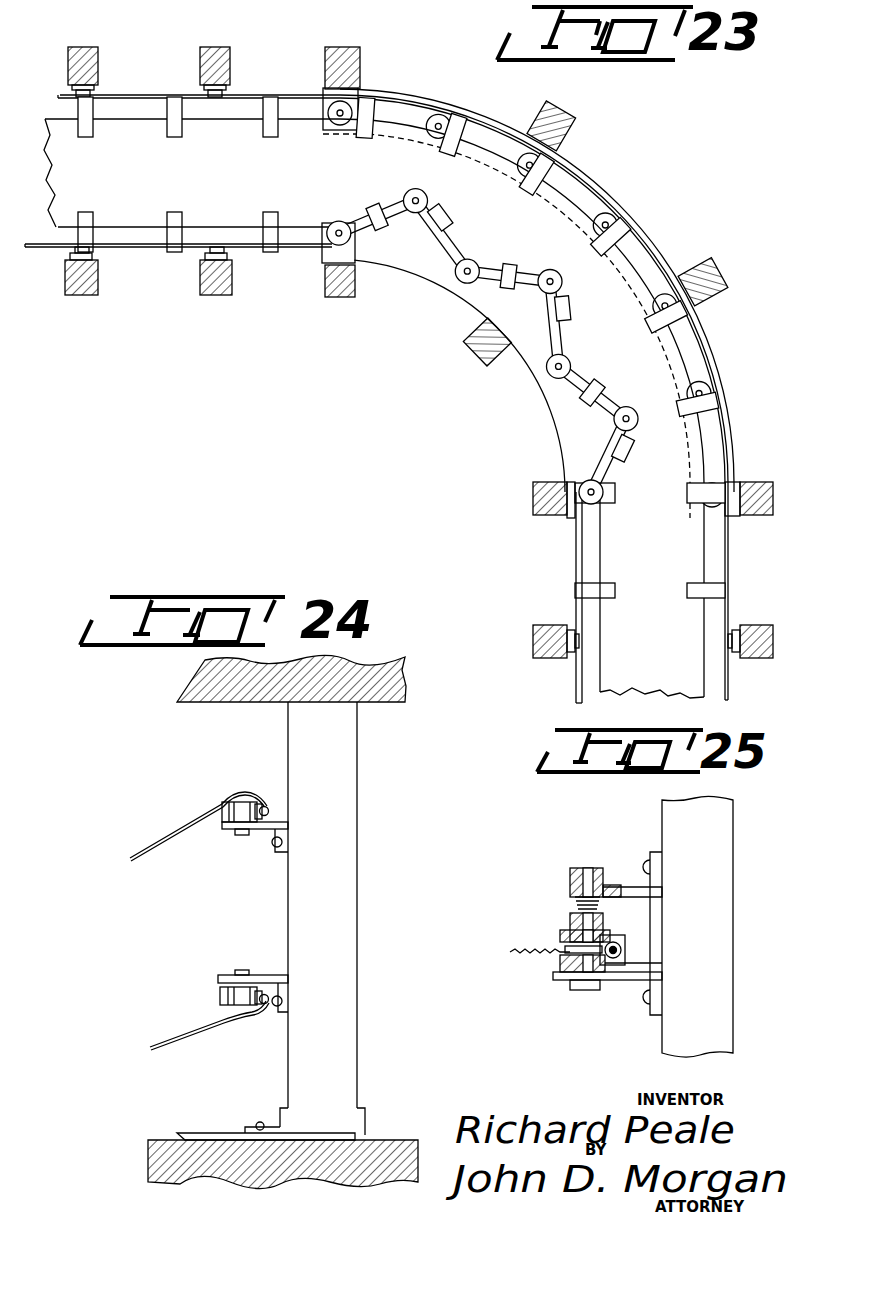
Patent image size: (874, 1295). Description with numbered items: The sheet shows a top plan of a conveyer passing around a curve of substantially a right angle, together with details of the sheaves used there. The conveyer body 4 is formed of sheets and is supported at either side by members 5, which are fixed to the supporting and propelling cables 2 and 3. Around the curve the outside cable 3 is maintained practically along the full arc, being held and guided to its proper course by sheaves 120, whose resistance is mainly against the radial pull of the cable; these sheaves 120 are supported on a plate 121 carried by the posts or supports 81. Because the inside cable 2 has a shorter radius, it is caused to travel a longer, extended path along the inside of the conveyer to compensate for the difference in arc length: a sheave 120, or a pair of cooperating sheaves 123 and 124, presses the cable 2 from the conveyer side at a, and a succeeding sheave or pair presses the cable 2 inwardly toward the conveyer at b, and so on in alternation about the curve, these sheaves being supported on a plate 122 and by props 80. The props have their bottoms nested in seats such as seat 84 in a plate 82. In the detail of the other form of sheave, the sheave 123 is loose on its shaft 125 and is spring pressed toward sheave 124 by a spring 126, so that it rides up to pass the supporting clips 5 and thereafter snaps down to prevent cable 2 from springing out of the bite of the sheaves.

In FIG. 23, the inside supporting and propelling cable 2 is at (133, 252).
In FIG. 25, the inside supporting and propelling cable 2 is at (622, 950).
In FIG. 23, the outside supporting and propelling cable 3 is at (145, 98).
In FIG. 24, the outside supporting and propelling cable 3 is at (269, 809).
In FIG. 23, the conveyer body 4 is at (50, 208).
In FIG. 24, the conveyer body 4 is at (161, 840).
In FIG. 25, the conveyer body 4 is at (512, 950).
In FIG. 23, the supporting members 5 is at (272, 97).
In FIG. 24, the supporting members 5 is at (258, 805).
In FIG. 25, the supporting members 5 is at (616, 940).
In FIG. 23, the prop 80 is at (483, 360).
In FIG. 25, the prop 80 is at (725, 882).
In FIG. 23, the prop 81 is at (566, 128).
In FIG. 24, the prop 81 is at (357, 748).
In FIG. 24, the plate 82 is at (206, 1133).
In FIG. 24, the seat 84 is at (323, 1133).
In FIG. 23, the sheave 120 is at (346, 106).
In FIG. 24, the sheave 120 is at (240, 802).
In FIG. 23, the plate 121 is at (608, 193).
In FIG. 23, the plate 122 is at (536, 372).
In FIG. 25, the sheave 123 is at (570, 920).
In FIG. 25, the sheave 124 is at (560, 966).
In FIG. 25, the shaft 125 is at (570, 880).
In FIG. 25, the spring 126 is at (572, 902).
In FIG. 23, the position where cable is pressed from inside a is at (352, 240).
In FIG. 23, the position where cable is pressed inwardly b is at (428, 196).